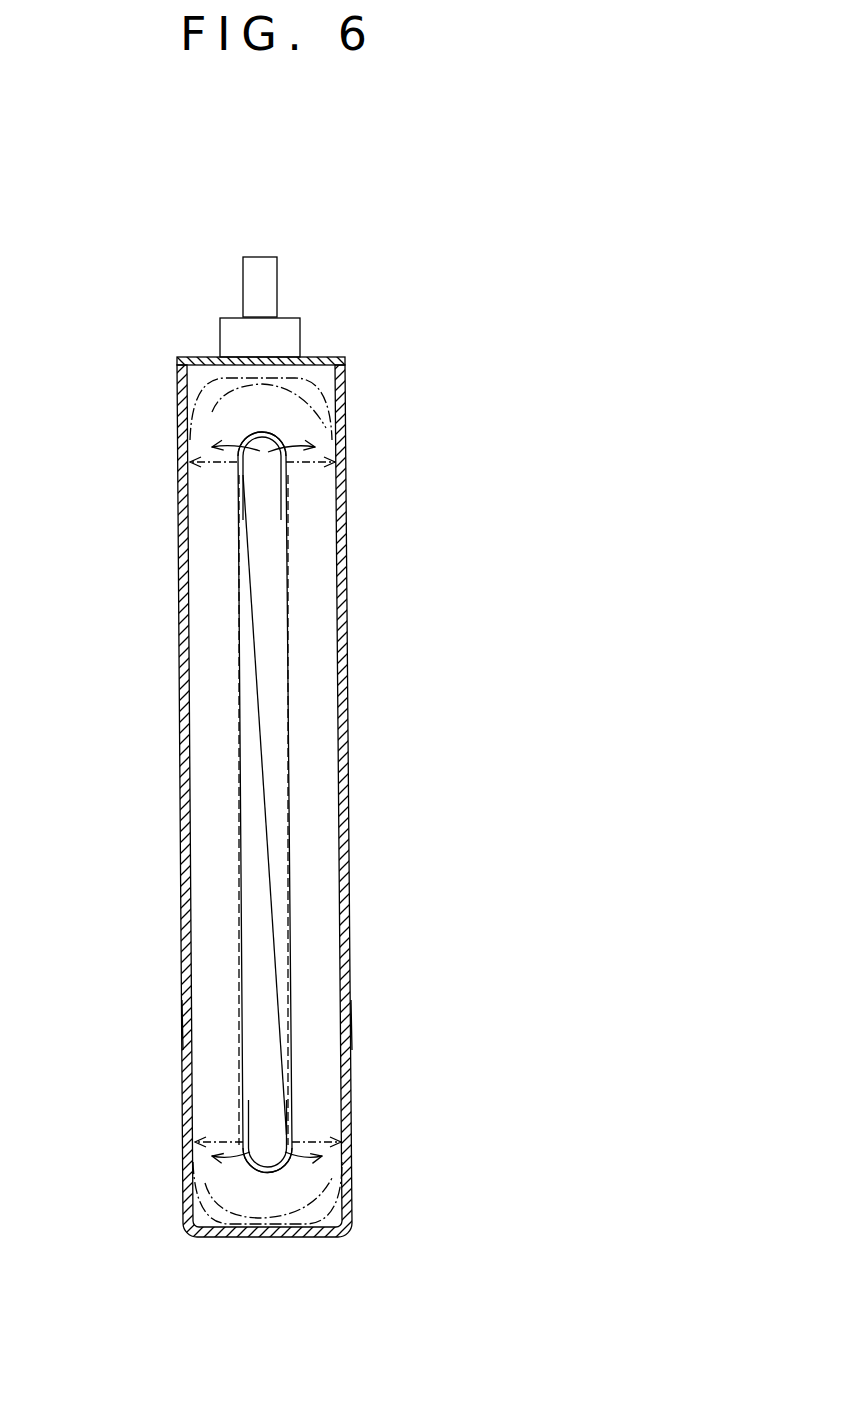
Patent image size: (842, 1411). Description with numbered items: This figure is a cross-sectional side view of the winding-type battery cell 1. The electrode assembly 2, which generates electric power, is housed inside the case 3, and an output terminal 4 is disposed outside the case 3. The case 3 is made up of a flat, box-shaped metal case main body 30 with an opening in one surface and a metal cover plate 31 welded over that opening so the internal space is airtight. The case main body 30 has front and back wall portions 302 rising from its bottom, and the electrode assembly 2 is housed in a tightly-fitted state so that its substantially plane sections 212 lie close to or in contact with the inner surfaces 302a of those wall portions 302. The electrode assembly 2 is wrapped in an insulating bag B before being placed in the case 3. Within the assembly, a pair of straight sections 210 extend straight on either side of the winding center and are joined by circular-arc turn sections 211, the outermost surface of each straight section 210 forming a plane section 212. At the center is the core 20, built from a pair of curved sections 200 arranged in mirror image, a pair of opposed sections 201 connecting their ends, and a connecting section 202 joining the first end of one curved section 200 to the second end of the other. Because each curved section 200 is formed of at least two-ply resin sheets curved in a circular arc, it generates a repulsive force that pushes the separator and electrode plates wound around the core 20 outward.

The battery cell 1 is at (414, 317).
The electrode assembly 2 is at (328, 522).
The case 3 is at (462, 370).
The output terminal 4 is at (262, 296).
The core 20 is at (236, 753).
The case main body 30 is at (350, 423).
The cover plate 31 is at (324, 354).
The curved section 200 is at (118, 1232).
The opposed section 201 is at (240, 623).
The connecting section 202 is at (273, 820).
The straight section 210 is at (213, 778).
The turn section 211 is at (248, 377).
The substantially plane section 212 is at (182, 678).
The front and back wall portion 302 is at (188, 1024).
The inner surface of front and back wall portion 302a is at (190, 993).
The insulating bag B is at (247, 402).